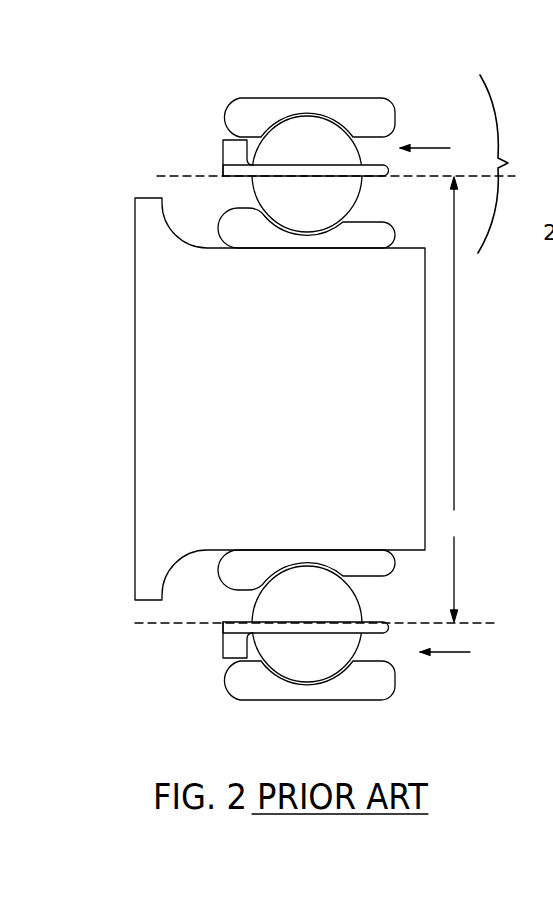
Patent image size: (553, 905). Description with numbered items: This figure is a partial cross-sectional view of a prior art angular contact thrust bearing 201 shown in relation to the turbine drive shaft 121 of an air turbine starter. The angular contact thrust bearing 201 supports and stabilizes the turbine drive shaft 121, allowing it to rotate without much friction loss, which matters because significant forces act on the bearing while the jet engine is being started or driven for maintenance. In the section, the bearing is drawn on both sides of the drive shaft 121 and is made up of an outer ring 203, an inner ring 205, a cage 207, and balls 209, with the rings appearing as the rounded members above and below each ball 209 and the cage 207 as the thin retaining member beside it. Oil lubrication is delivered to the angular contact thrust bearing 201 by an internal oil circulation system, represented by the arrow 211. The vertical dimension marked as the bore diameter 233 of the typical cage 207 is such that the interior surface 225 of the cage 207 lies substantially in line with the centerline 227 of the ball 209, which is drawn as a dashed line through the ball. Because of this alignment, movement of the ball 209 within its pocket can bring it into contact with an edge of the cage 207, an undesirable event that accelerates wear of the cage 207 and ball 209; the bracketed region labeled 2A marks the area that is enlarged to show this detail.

The turbine drive shaft 121 is at (298, 396).
The angular contact thrust bearing 201 is at (257, 87).
The outer ring 203 is at (376, 112).
The inner ring 205 is at (357, 246).
The cage 207 is at (236, 157).
The ball 209 is at (328, 216).
The arrow 211 is at (428, 148).
The interior surface 225 is at (384, 178).
The centerline 227 is at (198, 174).
The bore diameter 233 is at (454, 399).
The detail region 2A is at (511, 164).